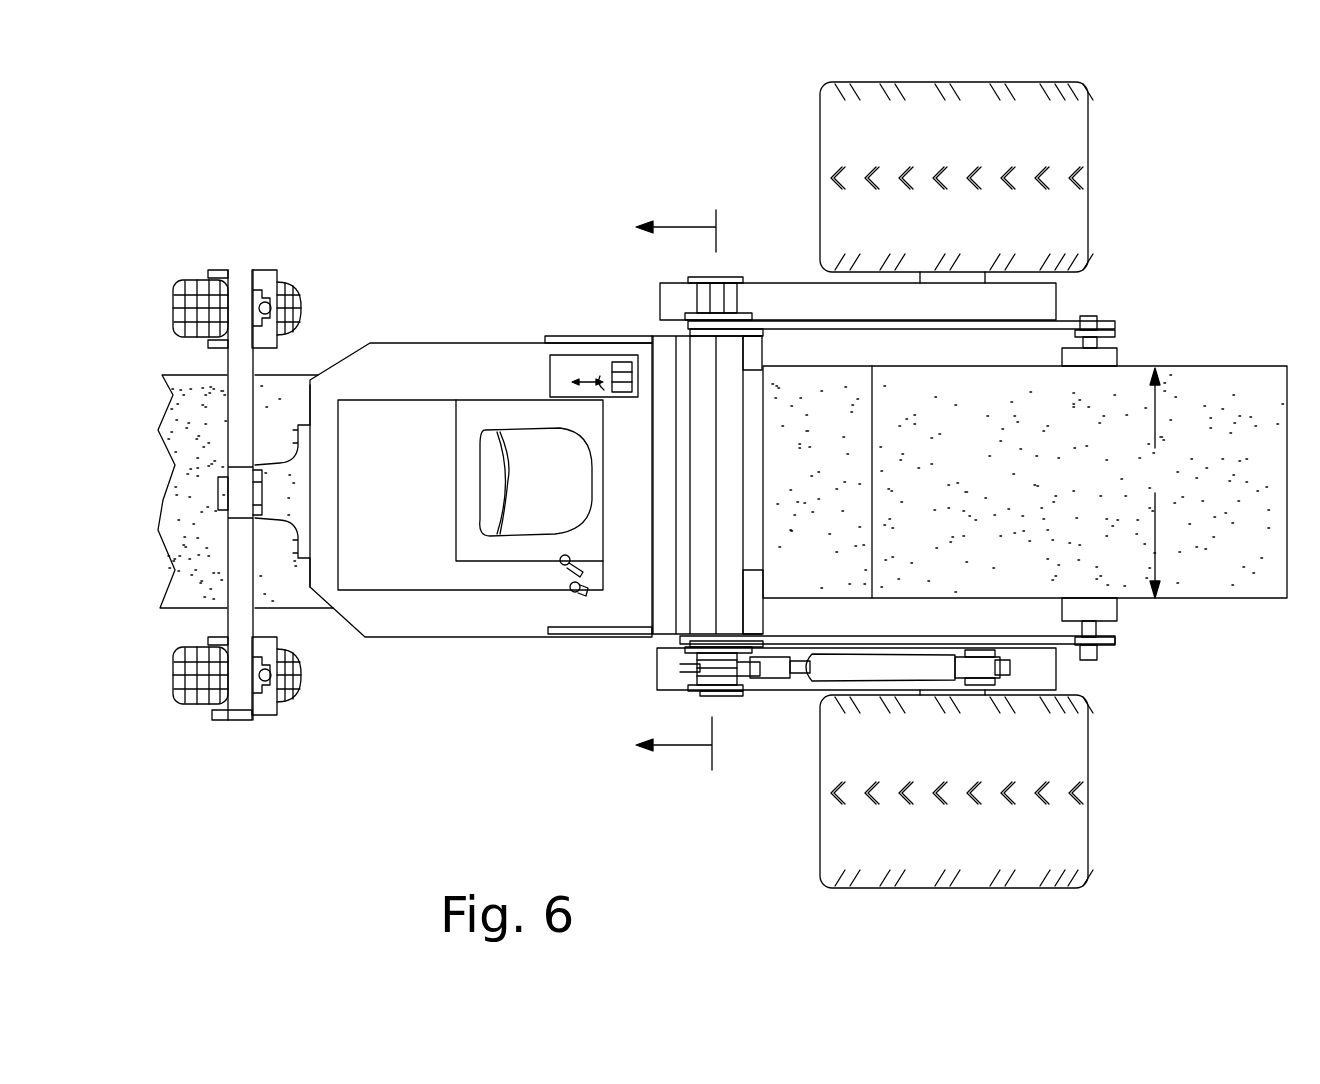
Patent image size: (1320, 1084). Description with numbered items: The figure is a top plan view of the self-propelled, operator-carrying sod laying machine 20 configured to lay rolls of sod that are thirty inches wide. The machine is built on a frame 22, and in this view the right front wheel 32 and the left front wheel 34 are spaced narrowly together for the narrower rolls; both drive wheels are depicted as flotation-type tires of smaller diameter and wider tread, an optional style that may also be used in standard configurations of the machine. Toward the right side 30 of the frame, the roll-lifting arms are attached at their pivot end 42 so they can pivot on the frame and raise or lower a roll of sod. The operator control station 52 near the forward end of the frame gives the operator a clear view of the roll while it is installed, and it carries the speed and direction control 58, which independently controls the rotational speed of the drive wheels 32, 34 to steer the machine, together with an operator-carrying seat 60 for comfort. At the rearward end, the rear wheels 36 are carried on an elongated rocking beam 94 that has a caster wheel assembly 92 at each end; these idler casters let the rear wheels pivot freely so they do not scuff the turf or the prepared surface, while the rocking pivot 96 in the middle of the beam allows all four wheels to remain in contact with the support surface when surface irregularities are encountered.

The sod laying machine 20 is at (516, 162).
The frame 22 is at (385, 680).
The right side 30 is at (495, 637).
The right front wheel 32 is at (830, 828).
The left front wheel 34 is at (828, 128).
The rear wheel 36 is at (297, 308).
The pivot end 42 is at (690, 328).
The operator control station 52 is at (482, 311).
The speed and direction control 58 is at (605, 382).
The operator-carrying seat 60 is at (520, 441).
The caster wheel assembly 92 is at (257, 282).
The rocking beam 94 is at (235, 347).
The rocking pivot 96 is at (220, 492).